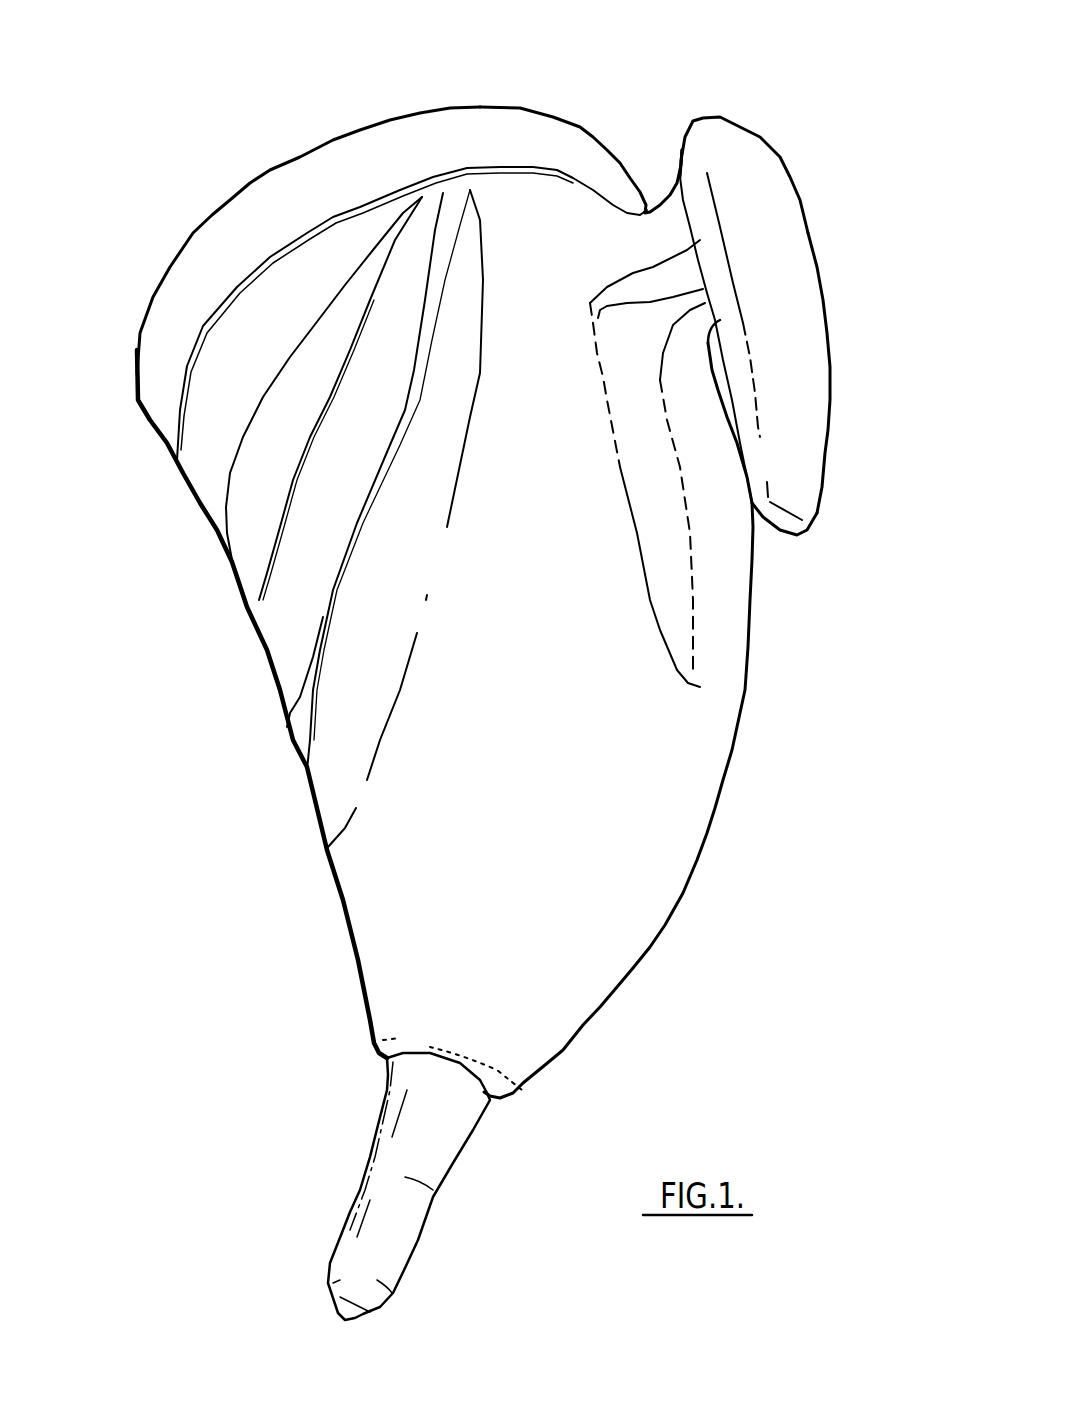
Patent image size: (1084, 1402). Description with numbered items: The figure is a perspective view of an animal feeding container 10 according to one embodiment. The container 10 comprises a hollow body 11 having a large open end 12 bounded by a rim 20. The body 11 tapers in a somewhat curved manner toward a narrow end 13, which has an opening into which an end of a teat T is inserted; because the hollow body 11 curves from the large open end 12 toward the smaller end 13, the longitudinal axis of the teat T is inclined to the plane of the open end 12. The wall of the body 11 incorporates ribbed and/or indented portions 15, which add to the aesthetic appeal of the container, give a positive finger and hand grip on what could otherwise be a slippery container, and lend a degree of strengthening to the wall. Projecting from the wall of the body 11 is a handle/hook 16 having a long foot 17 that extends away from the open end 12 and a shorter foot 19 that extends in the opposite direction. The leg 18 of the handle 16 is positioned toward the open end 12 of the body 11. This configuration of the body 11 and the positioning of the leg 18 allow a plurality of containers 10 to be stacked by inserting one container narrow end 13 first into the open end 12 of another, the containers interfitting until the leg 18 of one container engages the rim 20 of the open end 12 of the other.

The container 10 is at (250, 855).
The hollow body 11 is at (707, 783).
The large open end 12 is at (421, 110).
The narrow end 13 is at (512, 1077).
The ribbed and/or indented portions 15 is at (290, 628).
The handle/hook 16 is at (852, 351).
The long foot 17 is at (803, 453).
The leg 18 is at (762, 422).
The shorter foot 19 is at (719, 124).
The rim 20 is at (308, 207).
The teat T is at (345, 1187).